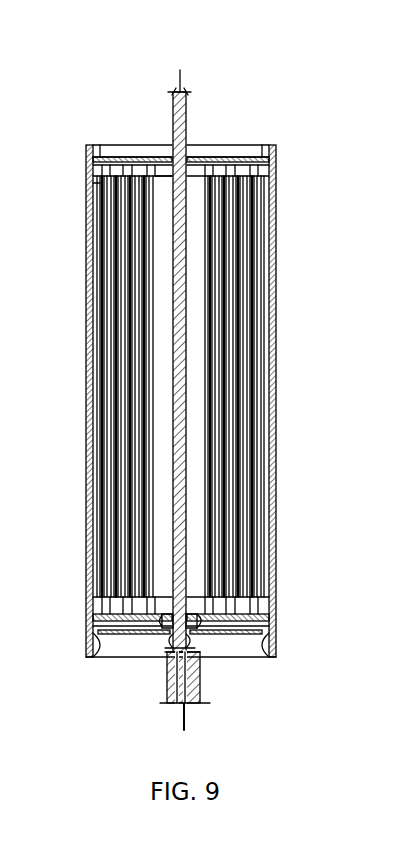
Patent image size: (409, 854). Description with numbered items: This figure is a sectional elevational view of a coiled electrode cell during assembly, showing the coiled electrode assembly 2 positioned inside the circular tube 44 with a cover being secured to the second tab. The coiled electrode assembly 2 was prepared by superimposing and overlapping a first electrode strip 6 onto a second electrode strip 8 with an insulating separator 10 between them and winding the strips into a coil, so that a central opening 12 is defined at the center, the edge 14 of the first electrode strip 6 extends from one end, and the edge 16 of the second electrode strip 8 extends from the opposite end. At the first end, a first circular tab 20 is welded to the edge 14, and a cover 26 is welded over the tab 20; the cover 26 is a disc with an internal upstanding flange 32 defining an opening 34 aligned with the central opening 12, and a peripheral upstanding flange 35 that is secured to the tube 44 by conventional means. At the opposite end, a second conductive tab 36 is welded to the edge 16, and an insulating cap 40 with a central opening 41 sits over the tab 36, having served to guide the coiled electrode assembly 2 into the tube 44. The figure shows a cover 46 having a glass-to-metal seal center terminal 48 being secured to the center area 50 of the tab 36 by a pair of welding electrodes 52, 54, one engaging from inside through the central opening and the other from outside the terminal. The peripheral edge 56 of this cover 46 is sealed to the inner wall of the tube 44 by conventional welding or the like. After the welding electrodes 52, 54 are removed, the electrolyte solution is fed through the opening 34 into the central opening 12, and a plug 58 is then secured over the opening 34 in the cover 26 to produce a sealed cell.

The coiled electrode assembly 2 is at (243, 258).
The first electrode strip 6 is at (88, 192).
The second electrode strip 8 is at (275, 606).
The insulating separator 10 is at (88, 175).
The central opening 12 is at (165, 292).
The edge of the first electrode strip 14 is at (273, 167).
The edge of the second electrode strip 16 is at (97, 607).
The first circular tab 20 is at (255, 165).
The cover 26 is at (237, 160).
The internal upstanding flange 32 is at (155, 148).
The opening 34 is at (187, 150).
The peripheral upstanding flange 35 is at (98, 157).
The second conductive tab 36 is at (245, 617).
The insulating cap 40 is at (272, 632).
The central opening 41 is at (173, 614).
The circular tube 44 is at (275, 372).
The cover 46 is at (233, 635).
The glass-to-metal seal center terminal 48 is at (205, 657).
The center area of the tab 50 is at (195, 614).
The welding electrode 52 is at (188, 385).
The welding electrode 54 is at (165, 690).
The peripheral edge 56 is at (103, 658).
The plug 58 is at (160, 180).